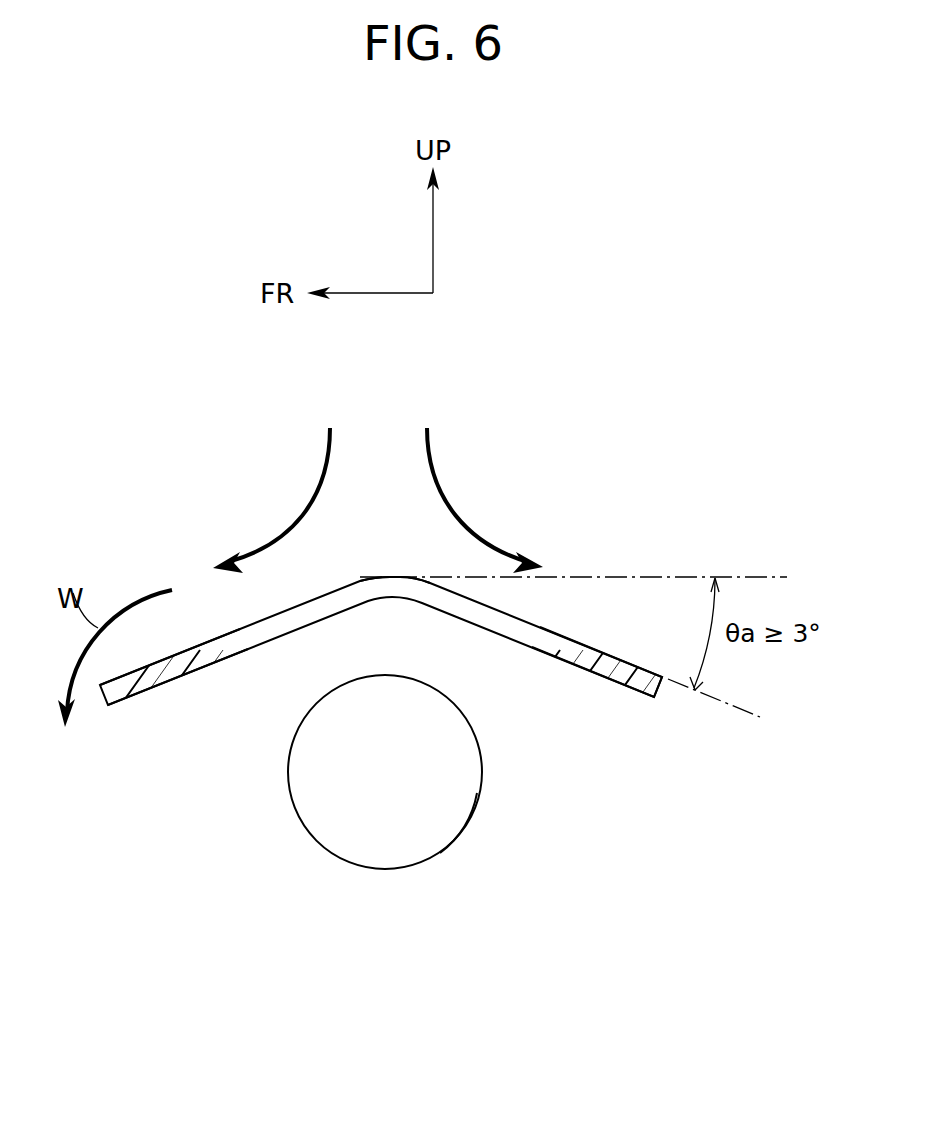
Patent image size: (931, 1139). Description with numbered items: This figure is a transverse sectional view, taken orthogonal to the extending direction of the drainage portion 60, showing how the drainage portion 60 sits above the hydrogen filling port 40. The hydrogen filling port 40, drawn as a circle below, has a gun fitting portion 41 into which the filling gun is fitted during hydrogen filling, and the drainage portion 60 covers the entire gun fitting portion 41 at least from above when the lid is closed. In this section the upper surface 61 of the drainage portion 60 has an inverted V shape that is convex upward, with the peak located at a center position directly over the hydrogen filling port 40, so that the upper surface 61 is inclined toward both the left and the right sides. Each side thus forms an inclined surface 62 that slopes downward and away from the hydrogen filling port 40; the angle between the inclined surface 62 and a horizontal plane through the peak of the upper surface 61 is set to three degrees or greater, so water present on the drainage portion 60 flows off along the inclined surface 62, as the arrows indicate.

The hydrogen filling port 40 is at (410, 867).
The gun fitting portion 41 is at (477, 793).
The drainage portion 60 is at (507, 638).
The upper surface 61 is at (345, 578).
The inclined surface 62 is at (233, 632).